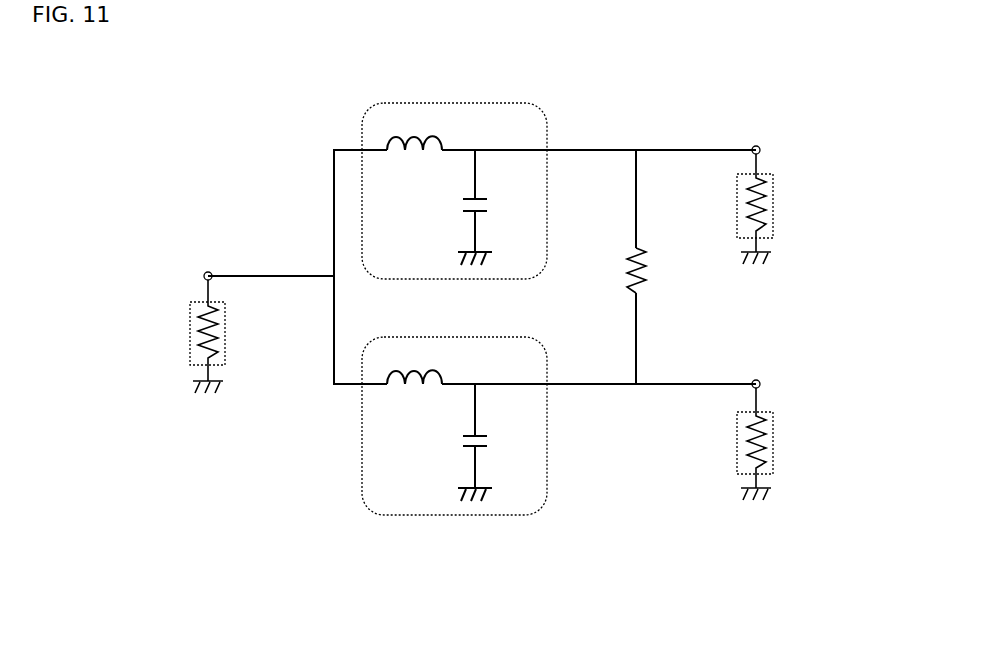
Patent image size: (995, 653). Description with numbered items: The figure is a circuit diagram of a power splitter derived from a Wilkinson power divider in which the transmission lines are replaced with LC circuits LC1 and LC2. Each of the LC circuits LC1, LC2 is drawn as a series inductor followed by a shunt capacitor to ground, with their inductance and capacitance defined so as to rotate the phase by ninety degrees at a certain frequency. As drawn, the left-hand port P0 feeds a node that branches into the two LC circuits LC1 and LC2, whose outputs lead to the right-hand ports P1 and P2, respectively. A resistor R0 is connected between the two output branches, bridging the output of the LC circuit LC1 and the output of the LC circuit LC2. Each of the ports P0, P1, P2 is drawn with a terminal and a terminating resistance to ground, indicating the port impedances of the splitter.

The LC circuit LC1 is at (459, 103).
The LC circuit LC2 is at (458, 515).
The isolation resistor R0 is at (654, 270).
The input port P0 is at (172, 263).
The first output port P1 is at (795, 135).
The second output port P2 is at (795, 370).